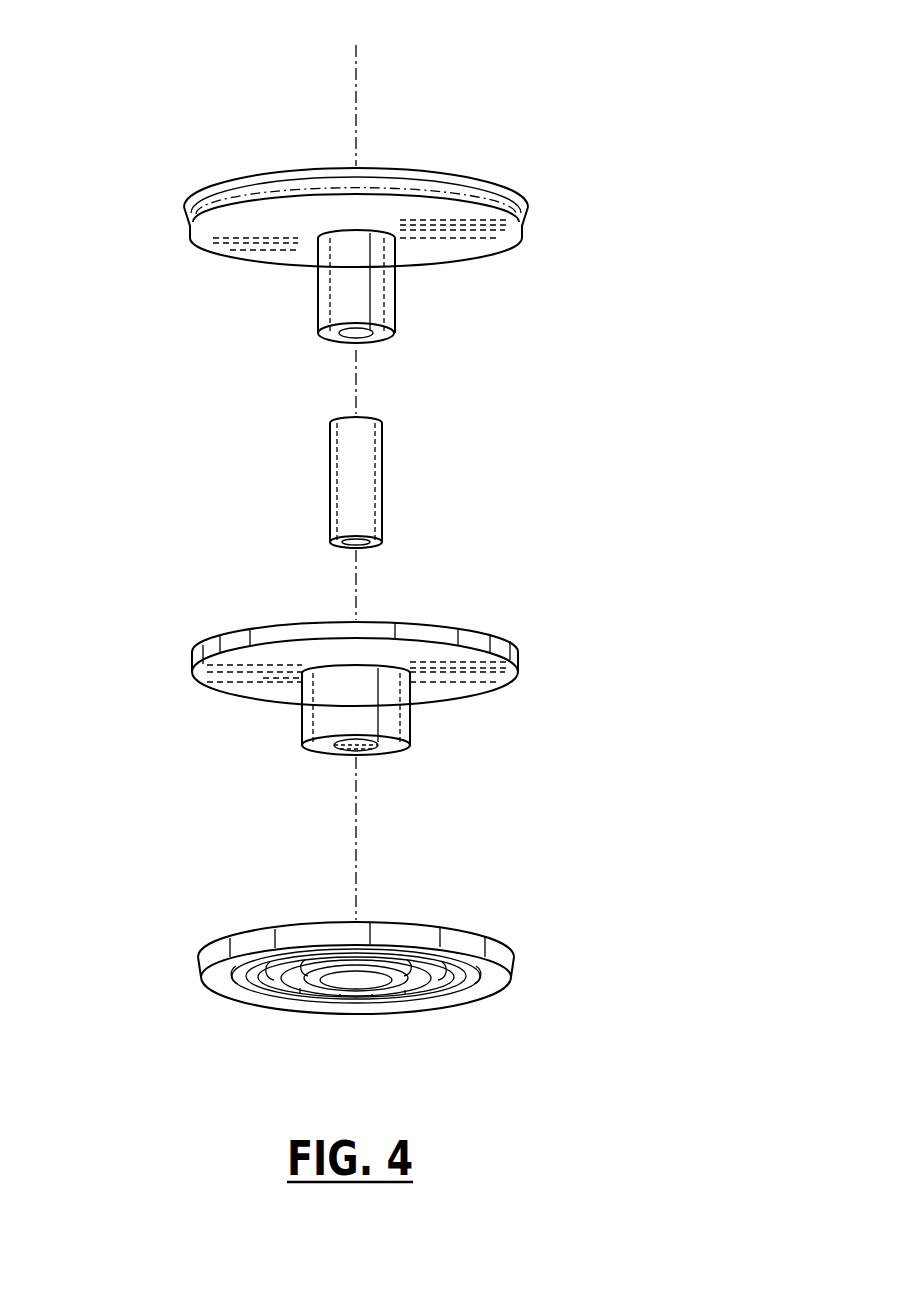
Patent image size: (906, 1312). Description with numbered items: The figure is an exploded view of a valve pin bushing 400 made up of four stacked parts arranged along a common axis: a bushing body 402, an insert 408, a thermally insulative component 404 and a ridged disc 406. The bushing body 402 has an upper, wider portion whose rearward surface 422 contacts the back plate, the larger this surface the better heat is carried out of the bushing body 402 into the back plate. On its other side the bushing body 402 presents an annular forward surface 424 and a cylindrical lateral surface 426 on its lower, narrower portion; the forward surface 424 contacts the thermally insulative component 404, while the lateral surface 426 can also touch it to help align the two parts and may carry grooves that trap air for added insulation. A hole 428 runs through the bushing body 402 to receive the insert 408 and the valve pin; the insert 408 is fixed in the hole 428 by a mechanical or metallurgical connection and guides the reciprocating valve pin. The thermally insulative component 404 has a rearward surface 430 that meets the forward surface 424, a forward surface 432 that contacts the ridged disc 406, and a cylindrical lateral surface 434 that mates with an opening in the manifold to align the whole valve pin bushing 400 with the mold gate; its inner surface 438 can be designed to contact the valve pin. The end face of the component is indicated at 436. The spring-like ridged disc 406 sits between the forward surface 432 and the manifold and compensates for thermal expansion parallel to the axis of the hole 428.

The valve pin bushing 400 is at (394, 551).
The bushing body 402 is at (468, 240).
The thermally insulative component 404 is at (465, 734).
The ridged disc 406 is at (552, 965).
The insert 408 is at (420, 462).
The rearward surface 422 is at (473, 183).
The annular forward surface 424 is at (488, 222).
The cylindrical lateral surface 426 is at (372, 300).
The hole 428 is at (366, 357).
The rearward surface 430 is at (484, 640).
The forward surface 432 is at (486, 685).
The cylindrical lateral surface 434 is at (393, 723).
The end face of middle hub 436 is at (397, 752).
The inner surface 438 is at (350, 752).